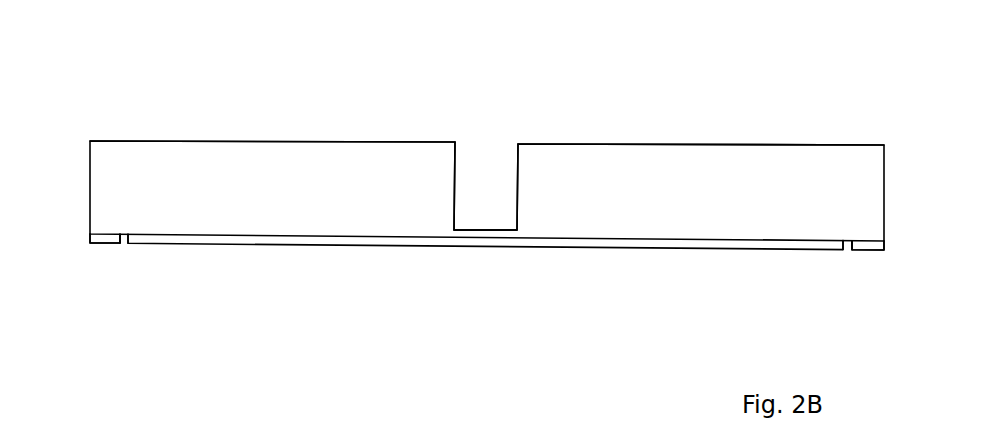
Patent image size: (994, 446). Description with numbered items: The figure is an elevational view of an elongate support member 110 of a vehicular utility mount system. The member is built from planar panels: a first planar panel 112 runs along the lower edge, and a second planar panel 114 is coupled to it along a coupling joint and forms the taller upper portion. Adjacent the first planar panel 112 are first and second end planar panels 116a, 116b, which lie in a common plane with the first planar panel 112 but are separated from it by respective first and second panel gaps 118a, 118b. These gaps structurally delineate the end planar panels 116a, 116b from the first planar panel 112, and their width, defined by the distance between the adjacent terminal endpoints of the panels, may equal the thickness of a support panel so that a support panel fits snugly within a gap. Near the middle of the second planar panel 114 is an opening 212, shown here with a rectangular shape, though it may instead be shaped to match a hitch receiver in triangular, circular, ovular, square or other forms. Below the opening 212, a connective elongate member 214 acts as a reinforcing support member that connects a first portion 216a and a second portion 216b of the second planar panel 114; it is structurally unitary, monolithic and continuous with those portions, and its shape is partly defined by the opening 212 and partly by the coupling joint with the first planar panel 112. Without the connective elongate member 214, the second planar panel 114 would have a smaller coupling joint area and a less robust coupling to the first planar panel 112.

The elongate support member 110 is at (489, 212).
The first planar panel 112 is at (562, 239).
The second planar panel 114 is at (328, 183).
The first end planar panel 116a is at (102, 241).
The second end planar panel 116b is at (871, 244).
The first panel gap 118a is at (125, 246).
The second panel gap 118b is at (846, 252).
The opening 212 is at (505, 132).
The connective elongate member 214 is at (483, 229).
The first portion of the second planar panel 216a is at (123, 140).
The second portion of the second planar panel 216b is at (786, 142).